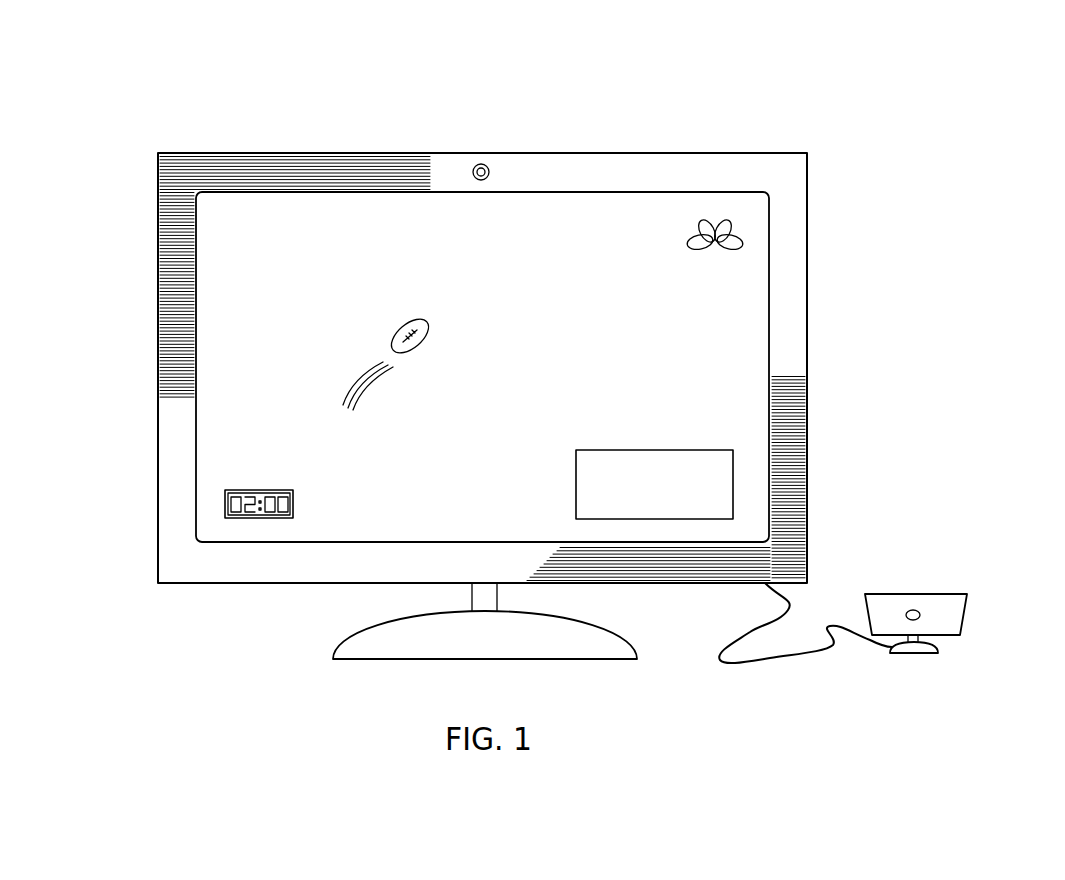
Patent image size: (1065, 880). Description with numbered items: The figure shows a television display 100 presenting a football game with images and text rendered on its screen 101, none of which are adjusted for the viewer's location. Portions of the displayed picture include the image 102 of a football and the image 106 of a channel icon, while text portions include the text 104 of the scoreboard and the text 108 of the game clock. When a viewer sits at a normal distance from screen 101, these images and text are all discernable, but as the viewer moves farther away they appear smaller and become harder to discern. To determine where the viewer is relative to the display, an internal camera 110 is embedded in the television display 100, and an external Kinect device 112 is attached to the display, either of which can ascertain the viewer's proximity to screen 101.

The television display 100 is at (907, 43).
The screen 101 is at (252, 192).
The image of a football 102 is at (431, 333).
The text of the scoreboard 104 is at (733, 482).
The image of the channel icon 106 is at (738, 233).
The text of the game clock 108 is at (251, 489).
The camera 110 is at (484, 171).
The Kinect device 112 is at (932, 593).